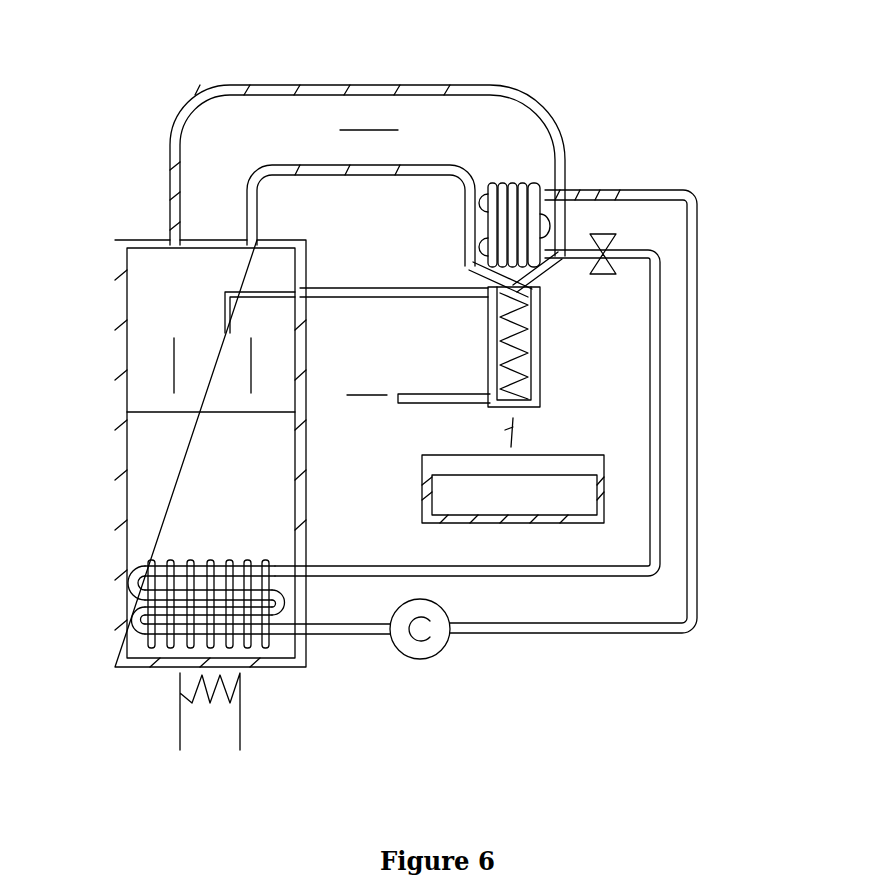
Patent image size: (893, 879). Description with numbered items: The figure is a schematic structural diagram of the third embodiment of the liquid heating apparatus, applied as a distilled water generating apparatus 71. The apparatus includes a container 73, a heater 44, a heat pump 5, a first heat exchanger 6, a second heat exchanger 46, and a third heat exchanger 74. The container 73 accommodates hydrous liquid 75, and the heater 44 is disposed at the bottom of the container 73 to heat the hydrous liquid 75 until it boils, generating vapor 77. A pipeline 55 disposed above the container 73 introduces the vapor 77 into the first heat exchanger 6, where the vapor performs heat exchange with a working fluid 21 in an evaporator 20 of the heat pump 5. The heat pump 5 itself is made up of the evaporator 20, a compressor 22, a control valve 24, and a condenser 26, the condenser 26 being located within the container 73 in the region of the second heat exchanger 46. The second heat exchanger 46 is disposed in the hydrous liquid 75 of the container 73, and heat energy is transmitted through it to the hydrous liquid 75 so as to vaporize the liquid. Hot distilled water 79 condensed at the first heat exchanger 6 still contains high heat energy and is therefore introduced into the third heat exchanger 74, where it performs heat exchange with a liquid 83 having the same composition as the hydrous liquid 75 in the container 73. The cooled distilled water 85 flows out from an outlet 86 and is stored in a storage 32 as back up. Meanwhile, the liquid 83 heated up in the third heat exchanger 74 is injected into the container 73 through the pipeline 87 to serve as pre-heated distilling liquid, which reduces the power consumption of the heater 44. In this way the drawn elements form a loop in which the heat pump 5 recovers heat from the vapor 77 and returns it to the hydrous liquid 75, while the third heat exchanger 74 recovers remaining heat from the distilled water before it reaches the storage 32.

The heat pump 5 is at (738, 193).
The first heat exchanger 6 is at (560, 172).
The evaporator 20 is at (570, 218).
The working fluid 21 is at (604, 190).
The compressor 22 is at (440, 652).
The control valve 24 is at (616, 260).
The condenser 26 is at (135, 625).
The storage 32 is at (604, 490).
The heater 44 is at (180, 715).
The second heat exchanger 46 is at (140, 560).
The pipeline 55 is at (466, 85).
The distilled water generating apparatus 71 is at (656, 105).
The container 73 is at (115, 350).
The third heat exchanger 74 is at (487, 340).
The hydrous liquid 75 is at (150, 462).
The vapor 77 is at (362, 130).
The hot distilled water 79 is at (548, 286).
The liquid 83 is at (255, 286).
The cooled distilled water 85 is at (518, 425).
The outlet 86 is at (500, 407).
The pipeline 87 is at (373, 288).